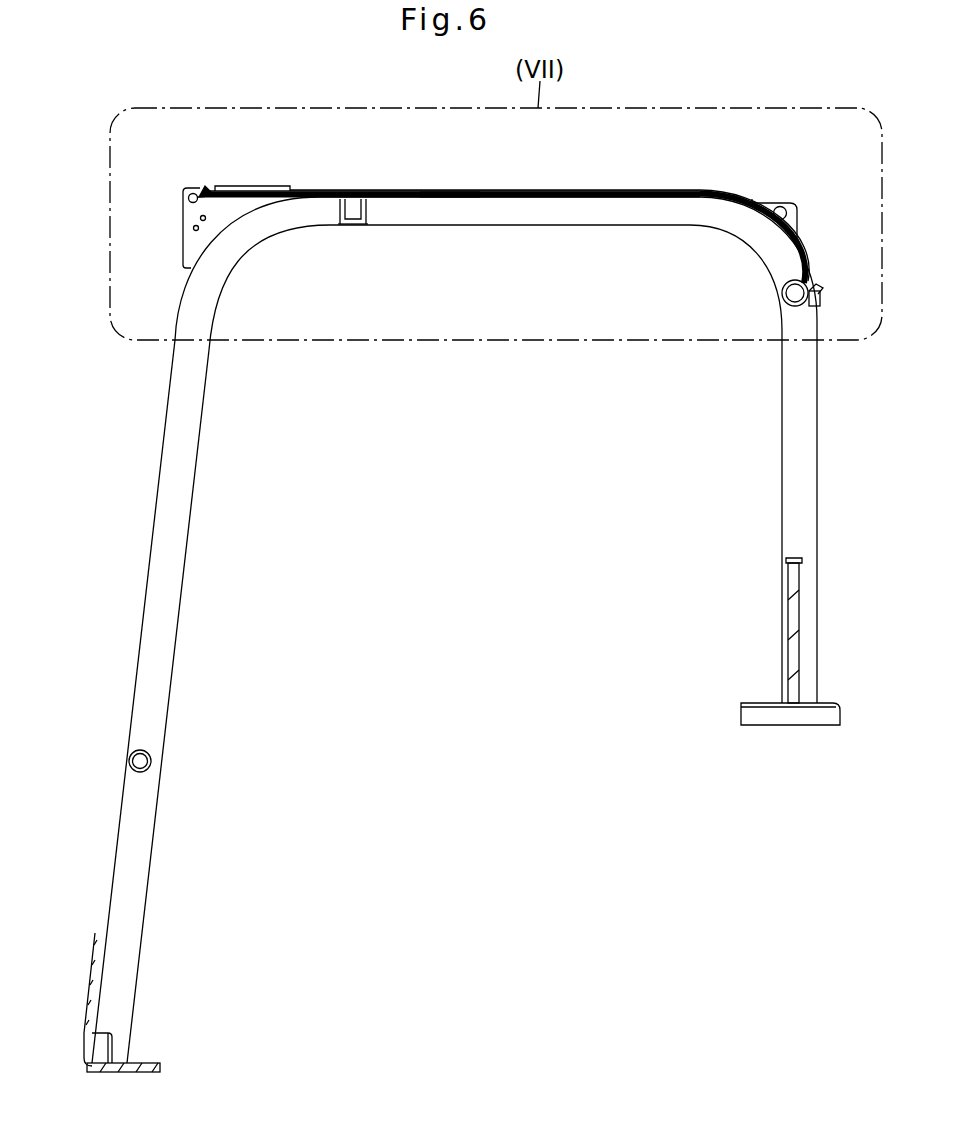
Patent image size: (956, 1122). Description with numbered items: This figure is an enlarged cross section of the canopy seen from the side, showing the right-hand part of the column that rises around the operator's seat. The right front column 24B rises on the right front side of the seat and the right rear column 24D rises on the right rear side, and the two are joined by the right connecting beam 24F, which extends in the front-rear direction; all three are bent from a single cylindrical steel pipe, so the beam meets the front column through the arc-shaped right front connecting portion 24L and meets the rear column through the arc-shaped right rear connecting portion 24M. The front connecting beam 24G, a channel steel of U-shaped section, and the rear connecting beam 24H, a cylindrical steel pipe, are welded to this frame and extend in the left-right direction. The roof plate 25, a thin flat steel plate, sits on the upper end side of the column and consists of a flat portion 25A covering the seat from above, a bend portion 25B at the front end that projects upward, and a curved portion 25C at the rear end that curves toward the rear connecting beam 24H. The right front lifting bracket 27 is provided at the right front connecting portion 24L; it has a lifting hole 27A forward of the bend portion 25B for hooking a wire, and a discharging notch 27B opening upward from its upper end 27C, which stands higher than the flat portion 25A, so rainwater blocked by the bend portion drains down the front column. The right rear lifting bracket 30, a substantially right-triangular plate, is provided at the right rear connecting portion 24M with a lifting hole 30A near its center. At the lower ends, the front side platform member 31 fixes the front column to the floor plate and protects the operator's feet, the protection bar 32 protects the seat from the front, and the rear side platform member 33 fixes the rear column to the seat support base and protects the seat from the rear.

The right front column 24B is at (164, 636).
The right rear column 24D is at (797, 466).
The right connecting beam 24F is at (495, 226).
The front connecting beam 24G is at (358, 226).
The rear connecting beam 24H is at (782, 295).
The right front connecting portion 24L is at (250, 236).
The right rear connecting portion 24M is at (748, 250).
The roof plate 25 is at (528, 204).
The flat portion 25A is at (450, 193).
The bend portion 25B is at (205, 187).
The curved portion 25C is at (800, 253).
The right front lifting bracket 27 is at (410, 207).
The lifting hole 27A is at (189, 193).
The discharging notch 27B is at (222, 186).
The upper end 27C is at (288, 191).
The right rear lifting bracket 30 is at (780, 200).
The lifting hole 30A is at (785, 208).
The front side platform member 31 is at (95, 985).
The protection bar 32 is at (151, 767).
The rear side platform member 33 is at (755, 702).